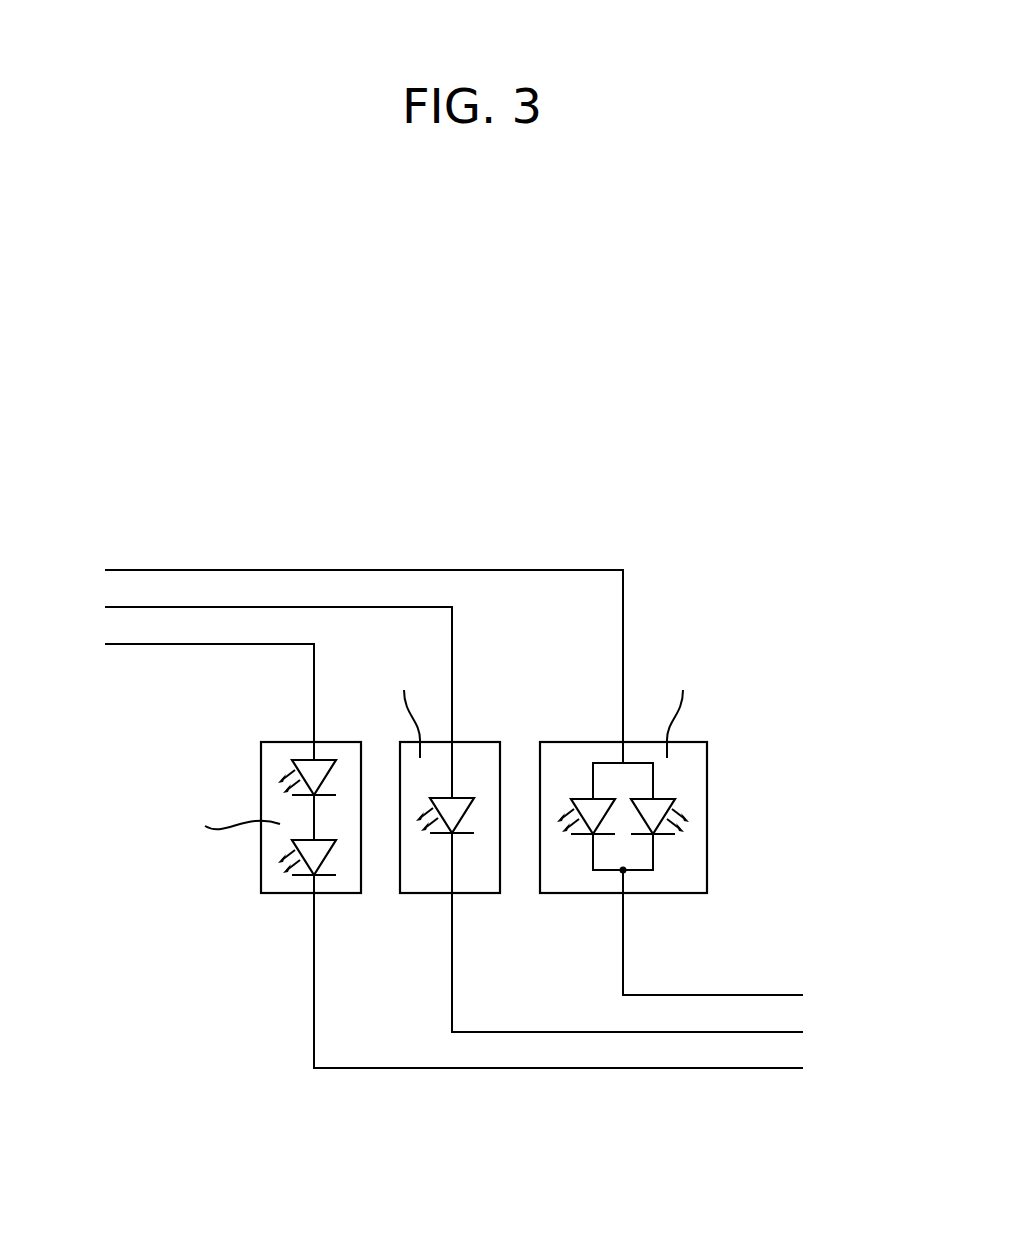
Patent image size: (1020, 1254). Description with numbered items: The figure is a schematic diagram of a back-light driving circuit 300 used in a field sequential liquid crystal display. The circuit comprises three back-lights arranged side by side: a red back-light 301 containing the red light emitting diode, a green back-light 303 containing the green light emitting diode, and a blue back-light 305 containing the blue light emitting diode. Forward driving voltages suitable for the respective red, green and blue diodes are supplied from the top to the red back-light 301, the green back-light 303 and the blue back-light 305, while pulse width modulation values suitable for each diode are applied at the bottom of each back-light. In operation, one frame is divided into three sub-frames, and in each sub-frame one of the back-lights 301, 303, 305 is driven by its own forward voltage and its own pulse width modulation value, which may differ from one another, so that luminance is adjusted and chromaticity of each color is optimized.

The LED light source circuit 300 is at (433, 488).
The R back-light 301 is at (292, 742).
The G back-light 303 is at (478, 742).
The B back-light 305 is at (707, 786).